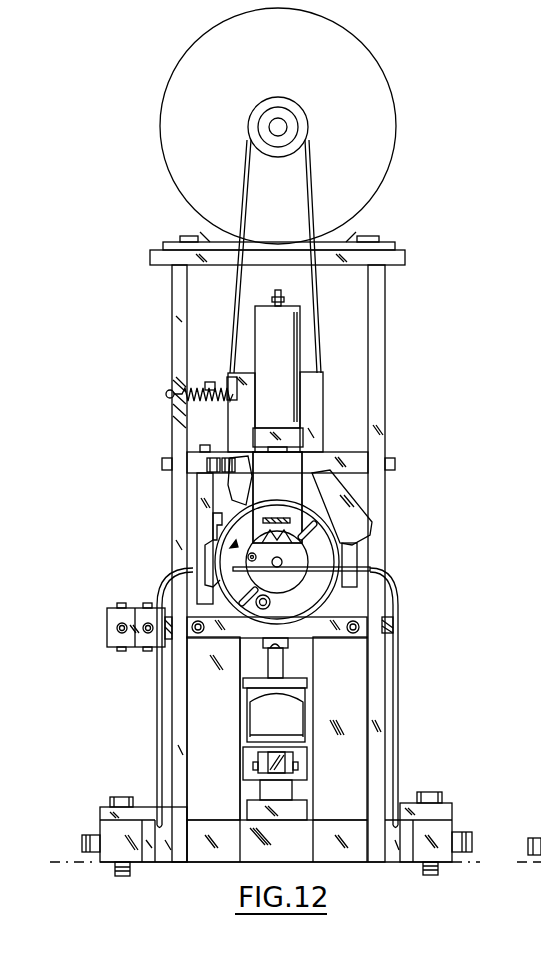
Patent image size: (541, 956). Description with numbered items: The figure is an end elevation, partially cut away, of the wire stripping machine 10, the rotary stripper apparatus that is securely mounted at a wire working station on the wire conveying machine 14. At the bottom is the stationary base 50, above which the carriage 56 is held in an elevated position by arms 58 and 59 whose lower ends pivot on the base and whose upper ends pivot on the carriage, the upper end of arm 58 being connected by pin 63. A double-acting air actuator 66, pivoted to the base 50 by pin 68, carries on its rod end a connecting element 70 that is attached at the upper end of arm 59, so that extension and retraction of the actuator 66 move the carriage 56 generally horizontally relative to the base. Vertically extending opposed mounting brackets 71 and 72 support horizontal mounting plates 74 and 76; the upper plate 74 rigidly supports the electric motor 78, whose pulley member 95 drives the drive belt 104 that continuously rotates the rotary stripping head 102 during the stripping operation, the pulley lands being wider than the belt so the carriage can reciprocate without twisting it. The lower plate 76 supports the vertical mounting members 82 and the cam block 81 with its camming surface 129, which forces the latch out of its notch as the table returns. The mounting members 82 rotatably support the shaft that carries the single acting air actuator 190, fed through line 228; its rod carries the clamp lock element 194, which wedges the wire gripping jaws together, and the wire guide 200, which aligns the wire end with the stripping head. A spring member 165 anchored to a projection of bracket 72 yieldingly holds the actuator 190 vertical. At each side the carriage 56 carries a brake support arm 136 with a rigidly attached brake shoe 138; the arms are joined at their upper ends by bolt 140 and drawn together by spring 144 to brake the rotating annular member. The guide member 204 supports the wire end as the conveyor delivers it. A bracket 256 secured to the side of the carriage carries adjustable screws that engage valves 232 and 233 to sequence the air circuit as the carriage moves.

The wire stripping machine 10 is at (414, 183).
The wire conveying machine 14 is at (485, 860).
The base 50 is at (327, 817).
The carriage 56 is at (333, 638).
The arm 58 is at (187, 771).
The arm 59 is at (240, 677).
The pin 63 is at (398, 623).
The double-acting air actuator 66 is at (255, 714).
The pin 68 is at (298, 767).
The connecting element 70 is at (288, 652).
The mounting bracket 71 is at (387, 290).
The mounting bracket 72 is at (172, 289).
The horizontal mounting plate 74 is at (406, 259).
The horizontal mounting plate 76 is at (340, 452).
The electric motor 78 is at (395, 92).
The cam block 81 is at (197, 484).
The mounting member 82 is at (318, 390).
The pulley member 95 is at (300, 104).
The rotary stripping head 102 is at (232, 617).
The drive belt 104 is at (309, 162).
The camming surface 129 is at (210, 537).
The brake support arm 136 is at (352, 505).
The brake shoe 138 is at (355, 542).
The bolt 140 is at (201, 462).
The spring 144 is at (227, 460).
The spring member 165 is at (197, 388).
The air actuator 190 is at (300, 333).
The clamp lock element 194 is at (290, 487).
The wire guide 200 is at (296, 513).
The guide member 204 is at (157, 758).
The line 228 is at (282, 299).
The valve 232 is at (107, 612).
The valve 233 is at (142, 606).
The bracket 256 is at (108, 635).